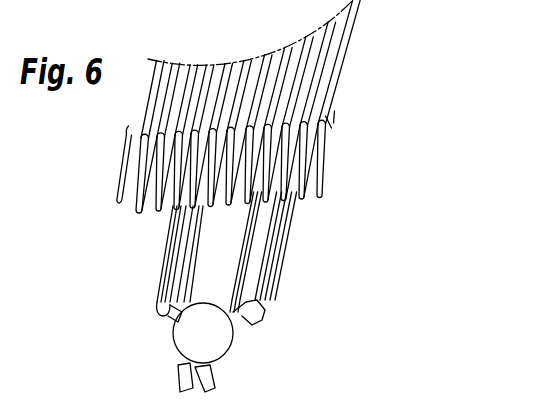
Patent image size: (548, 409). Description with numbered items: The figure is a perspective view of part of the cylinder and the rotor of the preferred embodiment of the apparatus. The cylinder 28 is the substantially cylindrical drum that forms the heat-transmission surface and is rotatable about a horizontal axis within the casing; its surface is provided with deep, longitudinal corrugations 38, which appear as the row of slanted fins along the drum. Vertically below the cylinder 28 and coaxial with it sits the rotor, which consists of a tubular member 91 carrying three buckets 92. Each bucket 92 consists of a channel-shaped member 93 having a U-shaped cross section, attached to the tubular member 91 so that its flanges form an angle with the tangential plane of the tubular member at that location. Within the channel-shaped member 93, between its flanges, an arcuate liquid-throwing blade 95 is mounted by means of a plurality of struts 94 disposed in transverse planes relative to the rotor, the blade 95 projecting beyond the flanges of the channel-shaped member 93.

The cylinder 28 is at (320, 140).
The corrugations 38 is at (295, 185).
The tubular member 91 is at (233, 348).
The bucket 92 is at (143, 313).
The channel-shaped member 93 is at (165, 275).
The struts 94 is at (178, 238).
The liquid-throwing blade 95 is at (280, 232).